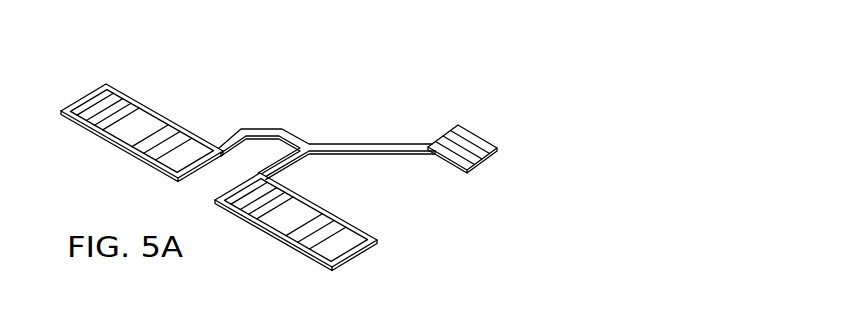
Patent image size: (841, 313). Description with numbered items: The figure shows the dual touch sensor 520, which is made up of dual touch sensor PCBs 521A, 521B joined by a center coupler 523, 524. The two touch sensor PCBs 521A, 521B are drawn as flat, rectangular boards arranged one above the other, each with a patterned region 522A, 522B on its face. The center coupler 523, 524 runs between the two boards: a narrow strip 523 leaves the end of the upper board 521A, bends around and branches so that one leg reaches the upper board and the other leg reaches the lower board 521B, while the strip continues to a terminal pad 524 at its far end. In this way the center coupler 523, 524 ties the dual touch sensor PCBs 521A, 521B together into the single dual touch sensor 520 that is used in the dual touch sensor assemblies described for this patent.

The dual touch sensor 520 is at (397, 54).
The dual touch sensor PCB 521A is at (82, 97).
The dual touch sensor PCB 521B is at (355, 260).
The first electrode 522A is at (158, 130).
The second electrode 522B is at (318, 222).
The center coupler 523 is at (377, 143).
The center coupler 524 is at (463, 137).